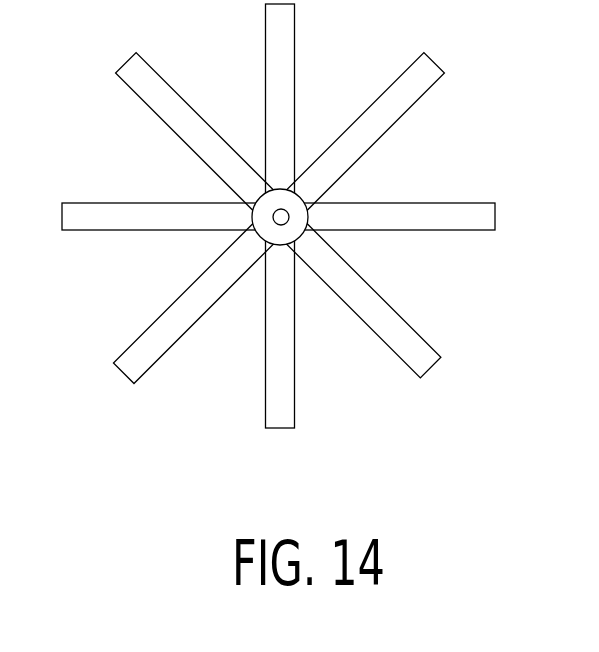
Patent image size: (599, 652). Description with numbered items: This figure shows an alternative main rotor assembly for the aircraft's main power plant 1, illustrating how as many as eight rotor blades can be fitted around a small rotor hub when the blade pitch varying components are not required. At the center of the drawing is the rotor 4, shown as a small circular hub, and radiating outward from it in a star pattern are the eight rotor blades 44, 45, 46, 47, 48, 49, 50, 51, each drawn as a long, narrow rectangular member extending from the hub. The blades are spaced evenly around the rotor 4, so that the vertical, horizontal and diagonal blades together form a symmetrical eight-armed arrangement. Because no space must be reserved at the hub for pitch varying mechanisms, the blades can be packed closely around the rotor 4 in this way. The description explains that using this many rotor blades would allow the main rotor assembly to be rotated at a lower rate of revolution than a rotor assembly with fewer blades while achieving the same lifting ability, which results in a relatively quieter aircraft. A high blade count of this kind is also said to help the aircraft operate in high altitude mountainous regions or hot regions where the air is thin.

The main power plant 1 is at (355, 388).
The rotor 4 is at (298, 221).
The rotor blade 44 is at (287, 49).
The rotor blade 45 is at (143, 73).
The rotor blade 46 is at (95, 217).
The rotor blade 47 is at (178, 310).
The rotor blade 48 is at (272, 353).
The rotor blade 49 is at (393, 320).
The rotor blade 50 is at (420, 212).
The rotor blade 51 is at (402, 107).